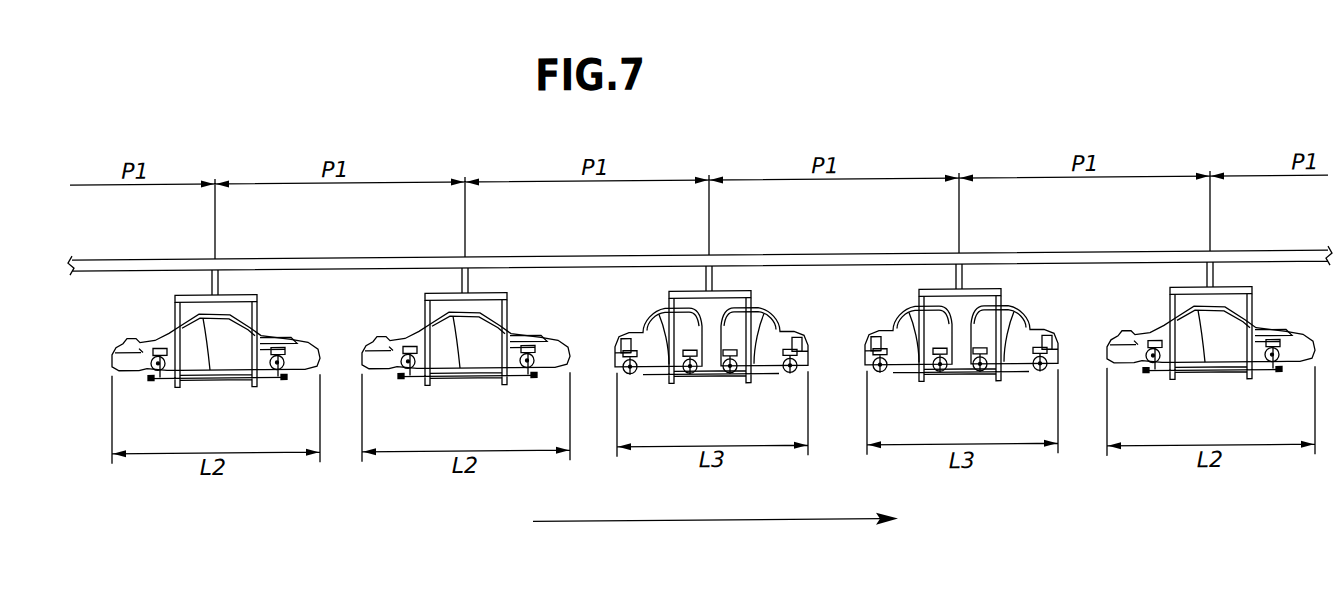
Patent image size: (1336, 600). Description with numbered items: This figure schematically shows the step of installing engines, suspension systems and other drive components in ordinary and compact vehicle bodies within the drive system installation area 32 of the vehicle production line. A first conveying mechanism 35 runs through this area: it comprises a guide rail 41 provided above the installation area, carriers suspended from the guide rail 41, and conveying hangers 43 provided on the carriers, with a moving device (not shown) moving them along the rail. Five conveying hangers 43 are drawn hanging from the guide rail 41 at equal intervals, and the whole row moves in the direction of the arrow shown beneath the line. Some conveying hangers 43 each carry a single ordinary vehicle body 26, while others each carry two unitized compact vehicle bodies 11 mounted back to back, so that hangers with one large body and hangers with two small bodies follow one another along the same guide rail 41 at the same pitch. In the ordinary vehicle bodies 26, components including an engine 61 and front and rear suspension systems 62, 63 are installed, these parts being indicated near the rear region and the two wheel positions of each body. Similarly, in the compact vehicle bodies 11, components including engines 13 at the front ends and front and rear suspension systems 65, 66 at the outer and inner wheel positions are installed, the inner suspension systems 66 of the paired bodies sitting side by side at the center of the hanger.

The vehicle body of the compact automobile 11 is at (648, 321).
The engine 13 is at (627, 343).
The vehicle body of the ordinary automobile 26 is at (140, 342).
The drive system installation area 32 is at (903, 80).
The first conveying mechanism 35 is at (256, 292).
The guide rail 41 is at (386, 260).
The conveying hanger 43 is at (190, 297).
The engine 61 is at (280, 338).
The front suspension system 62 is at (275, 372).
The rear suspension system 63 is at (162, 372).
The front suspension system 65 is at (630, 371).
The rear suspension system 66 is at (690, 373).